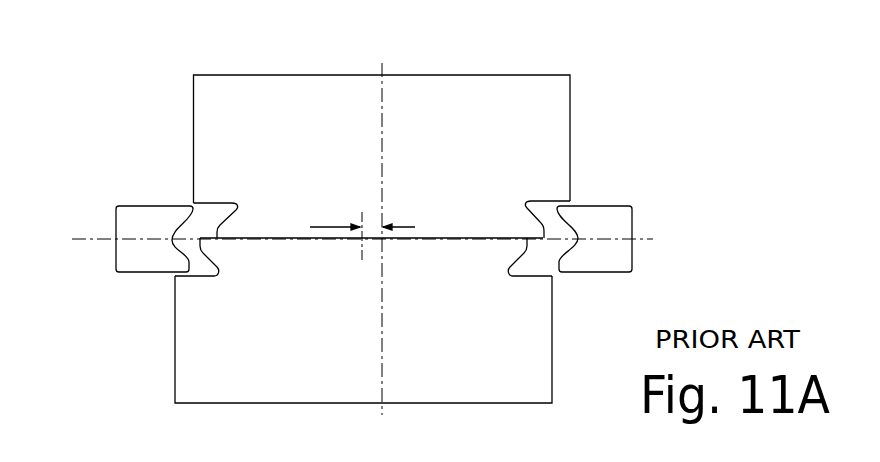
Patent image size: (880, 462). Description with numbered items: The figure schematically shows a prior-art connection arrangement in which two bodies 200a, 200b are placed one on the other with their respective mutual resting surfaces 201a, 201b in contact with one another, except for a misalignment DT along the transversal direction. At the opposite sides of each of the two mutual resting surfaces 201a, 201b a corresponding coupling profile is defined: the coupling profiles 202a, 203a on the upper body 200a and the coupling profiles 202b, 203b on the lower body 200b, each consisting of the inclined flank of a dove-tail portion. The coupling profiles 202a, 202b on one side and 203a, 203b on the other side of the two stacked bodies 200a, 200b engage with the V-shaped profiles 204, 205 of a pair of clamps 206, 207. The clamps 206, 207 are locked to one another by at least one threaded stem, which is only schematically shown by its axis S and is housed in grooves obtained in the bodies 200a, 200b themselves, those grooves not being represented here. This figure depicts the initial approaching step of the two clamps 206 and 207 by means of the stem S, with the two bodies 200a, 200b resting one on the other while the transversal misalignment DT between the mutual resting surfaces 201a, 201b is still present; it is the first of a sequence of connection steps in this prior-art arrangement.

The body 200a is at (535, 90).
The body 200b is at (500, 385).
The mutual resting surface 201a is at (242, 238).
The mutual resting surface 201b is at (285, 238).
The coupling profile 202a is at (222, 224).
The coupling profile 202b is at (217, 266).
The coupling profile 203a is at (528, 201).
The coupling profile 203b is at (508, 264).
The V-shaped profile 204 is at (180, 262).
The V-shaped profile 205 is at (553, 262).
The clamp 206 is at (128, 260).
The clamp 207 is at (620, 257).
The misalignment DT is at (372, 227).
The axis of threaded stem S is at (643, 230).